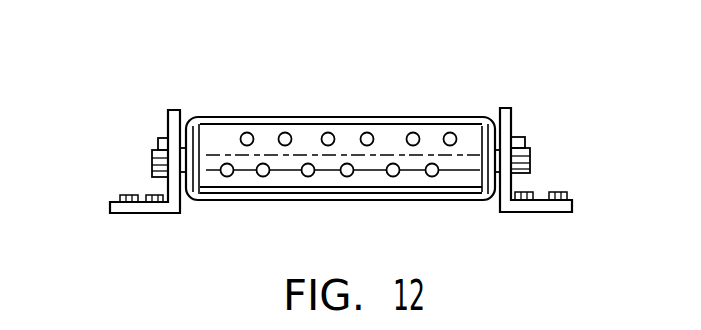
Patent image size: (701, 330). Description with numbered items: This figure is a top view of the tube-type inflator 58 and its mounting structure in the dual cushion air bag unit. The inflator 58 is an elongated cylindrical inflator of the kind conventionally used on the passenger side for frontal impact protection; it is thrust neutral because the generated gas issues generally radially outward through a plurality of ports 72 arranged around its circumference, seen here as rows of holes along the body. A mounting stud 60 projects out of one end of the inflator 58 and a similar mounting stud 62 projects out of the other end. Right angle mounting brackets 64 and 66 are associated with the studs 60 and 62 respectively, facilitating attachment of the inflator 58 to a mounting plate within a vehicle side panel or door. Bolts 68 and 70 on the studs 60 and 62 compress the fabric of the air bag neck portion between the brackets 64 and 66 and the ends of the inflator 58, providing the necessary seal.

The tube type inflator 58 is at (252, 122).
The ports 72 is at (445, 133).
The mounting stud 60 is at (152, 158).
The mounting stud 62 is at (530, 160).
The right angle mounting bracket 64 is at (143, 213).
The right angle mounting bracket 66 is at (532, 212).
The bolt 68 is at (158, 138).
The bolt 70 is at (515, 138).